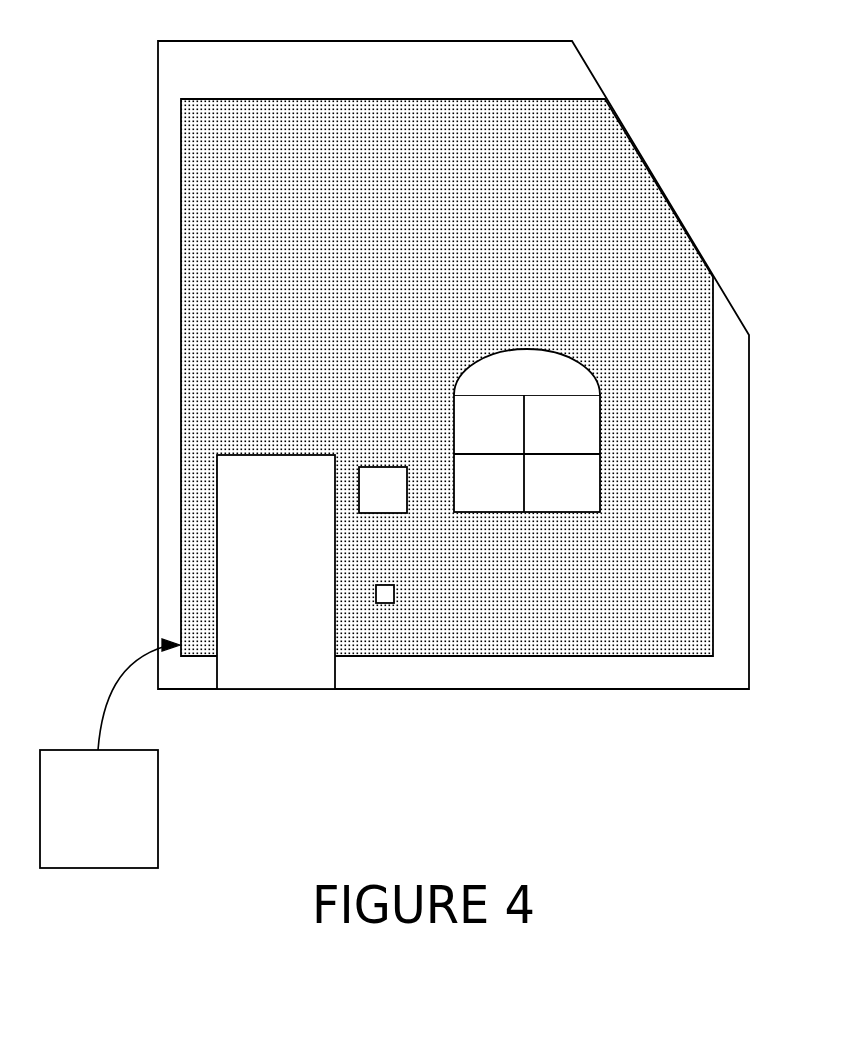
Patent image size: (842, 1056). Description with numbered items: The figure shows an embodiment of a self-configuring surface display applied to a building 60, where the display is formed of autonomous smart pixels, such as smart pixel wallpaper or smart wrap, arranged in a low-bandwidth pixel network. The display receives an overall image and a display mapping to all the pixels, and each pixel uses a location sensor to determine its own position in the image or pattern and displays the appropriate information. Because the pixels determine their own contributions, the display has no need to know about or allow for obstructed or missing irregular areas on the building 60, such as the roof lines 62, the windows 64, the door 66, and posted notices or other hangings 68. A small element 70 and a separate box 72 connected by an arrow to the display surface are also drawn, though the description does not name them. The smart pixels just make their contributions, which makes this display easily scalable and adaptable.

The building 60 is at (437, 40).
The roof lines 62 is at (665, 193).
The windows 64 is at (553, 352).
The door 66 is at (270, 453).
The posted notices or other hangings 68 is at (373, 467).
The sensor 70 is at (395, 593).
The device 72 is at (158, 832).